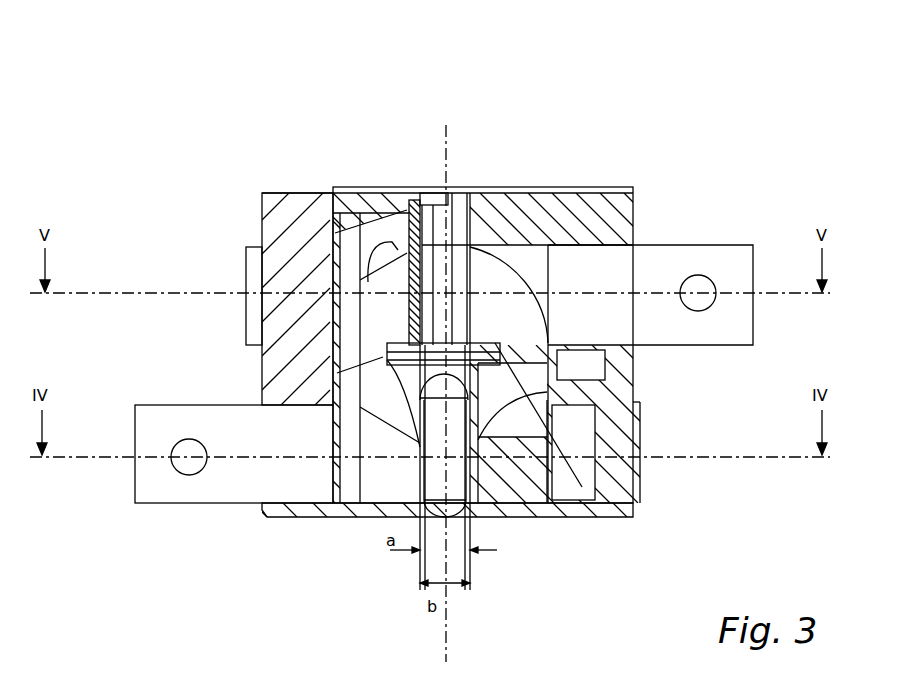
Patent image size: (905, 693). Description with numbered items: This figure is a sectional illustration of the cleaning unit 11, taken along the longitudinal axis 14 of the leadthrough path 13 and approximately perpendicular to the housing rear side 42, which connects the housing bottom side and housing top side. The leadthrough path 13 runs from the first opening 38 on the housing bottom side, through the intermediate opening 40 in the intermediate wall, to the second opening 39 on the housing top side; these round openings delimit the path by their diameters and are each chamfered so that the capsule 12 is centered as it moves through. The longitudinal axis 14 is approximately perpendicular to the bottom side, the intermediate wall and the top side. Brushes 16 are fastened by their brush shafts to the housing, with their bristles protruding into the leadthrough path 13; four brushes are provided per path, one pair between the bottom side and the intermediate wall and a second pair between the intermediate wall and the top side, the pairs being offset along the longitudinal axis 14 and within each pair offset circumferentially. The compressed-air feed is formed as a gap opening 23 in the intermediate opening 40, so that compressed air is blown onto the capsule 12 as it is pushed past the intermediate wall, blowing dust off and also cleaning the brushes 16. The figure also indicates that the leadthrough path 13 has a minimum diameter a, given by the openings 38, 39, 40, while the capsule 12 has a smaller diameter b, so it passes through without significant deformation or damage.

The cleaning unit 11 is at (702, 118).
The capsule 12 is at (485, 487).
The leadthrough path 13 is at (471, 379).
The longitudinal axis 14 is at (444, 178).
The brush 16 is at (527, 243).
The gap opening 23 is at (413, 367).
The first opening 38 is at (490, 512).
The second opening 39 is at (420, 188).
The intermediate opening 40 is at (413, 345).
The housing rear side 42 is at (260, 228).